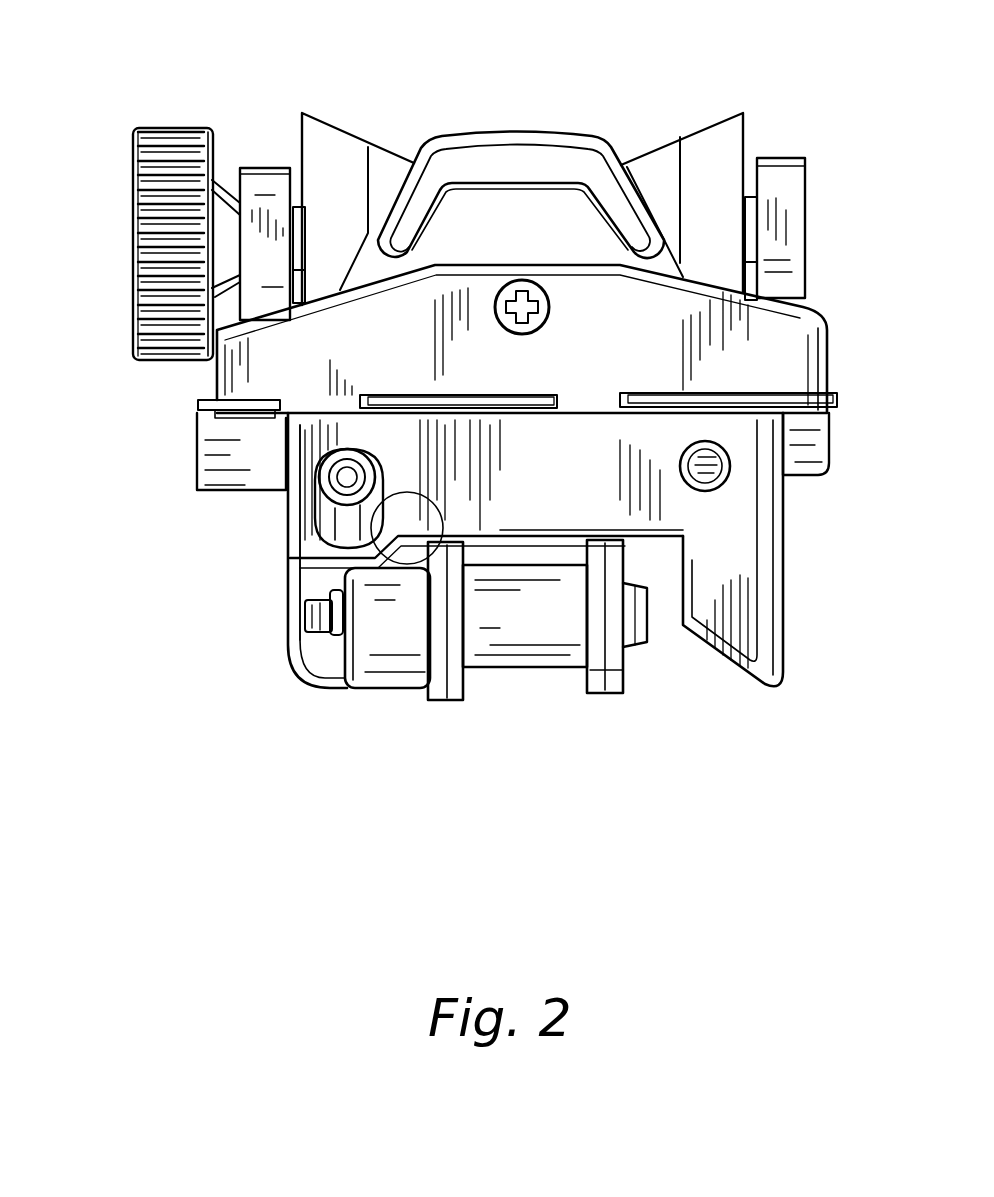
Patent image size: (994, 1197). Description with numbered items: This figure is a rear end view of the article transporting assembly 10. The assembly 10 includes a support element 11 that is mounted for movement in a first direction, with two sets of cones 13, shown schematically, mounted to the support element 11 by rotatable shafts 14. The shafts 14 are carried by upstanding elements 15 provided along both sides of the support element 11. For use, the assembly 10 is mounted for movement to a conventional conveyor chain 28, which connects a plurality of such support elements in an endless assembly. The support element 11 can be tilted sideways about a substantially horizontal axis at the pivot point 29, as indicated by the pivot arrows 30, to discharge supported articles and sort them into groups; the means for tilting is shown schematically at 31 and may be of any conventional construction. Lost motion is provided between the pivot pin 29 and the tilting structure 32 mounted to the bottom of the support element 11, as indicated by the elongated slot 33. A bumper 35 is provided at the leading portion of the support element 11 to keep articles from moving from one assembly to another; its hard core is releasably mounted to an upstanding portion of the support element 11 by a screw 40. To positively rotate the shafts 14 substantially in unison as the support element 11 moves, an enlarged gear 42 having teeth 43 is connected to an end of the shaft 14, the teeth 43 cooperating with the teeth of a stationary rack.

The article transporting assembly 10 is at (145, 545).
The support element 11 is at (808, 352).
The sets of cones 13 is at (711, 90).
The rotatable shafts 14 is at (749, 198).
The upstanding elements 15 is at (263, 182).
The conveyor chain 28 is at (618, 690).
The pivot point 29 is at (340, 478).
The pivot arrows 30 is at (394, 470).
The means for tilting 31 is at (770, 722).
The tilting structure 32 is at (647, 512).
The elongated slot 33 is at (462, 540).
The bumper 35 is at (541, 112).
The screw 40 is at (548, 312).
The gears 42 is at (141, 104).
The teeth 43 is at (150, 297).